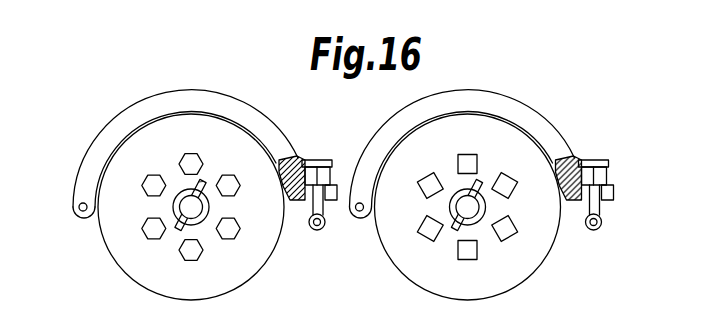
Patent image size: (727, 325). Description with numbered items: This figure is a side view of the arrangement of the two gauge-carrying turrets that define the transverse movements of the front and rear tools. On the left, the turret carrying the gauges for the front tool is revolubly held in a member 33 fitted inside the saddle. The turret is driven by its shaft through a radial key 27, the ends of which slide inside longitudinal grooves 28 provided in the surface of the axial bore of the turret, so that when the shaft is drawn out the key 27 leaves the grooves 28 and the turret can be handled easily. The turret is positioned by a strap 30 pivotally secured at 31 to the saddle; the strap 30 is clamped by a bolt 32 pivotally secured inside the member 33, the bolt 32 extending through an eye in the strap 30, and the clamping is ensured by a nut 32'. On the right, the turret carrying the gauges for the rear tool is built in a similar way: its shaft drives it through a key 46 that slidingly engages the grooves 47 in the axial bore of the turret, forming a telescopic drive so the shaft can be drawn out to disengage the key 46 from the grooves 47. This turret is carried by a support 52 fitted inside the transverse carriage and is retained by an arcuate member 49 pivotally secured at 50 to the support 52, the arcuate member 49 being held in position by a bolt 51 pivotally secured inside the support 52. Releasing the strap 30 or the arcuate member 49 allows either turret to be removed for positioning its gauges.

The radial key 27 is at (182, 230).
The longitudinal grooves 28 is at (203, 181).
The strap 30 is at (205, 93).
The pivot of strap 31 is at (78, 207).
The bolt 32 is at (317, 175).
The nut 32' is at (343, 160).
The member 33 is at (113, 259).
The key 46 is at (487, 231).
The grooves 47 is at (451, 228).
The arcuate member 49 is at (466, 145).
The pivot of arcuate member 50 is at (354, 227).
The bolt 51 is at (604, 176).
The support 52 is at (461, 207).